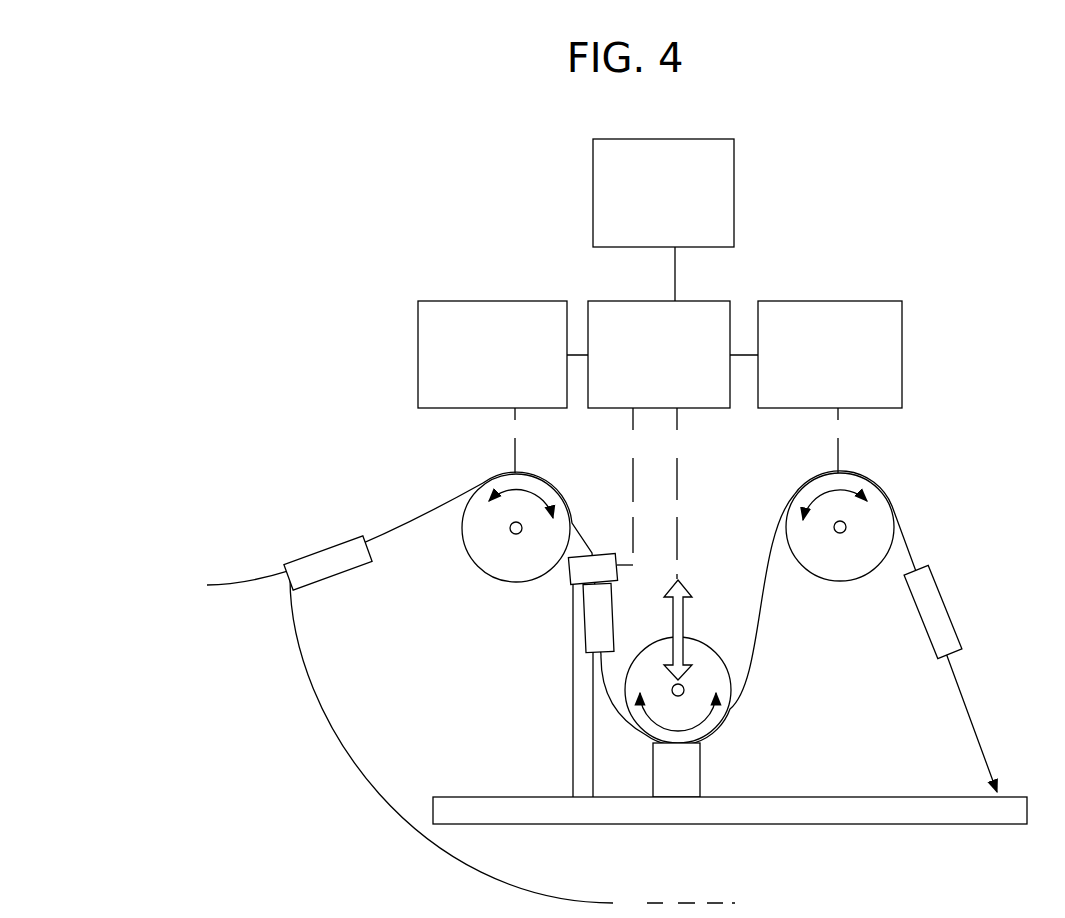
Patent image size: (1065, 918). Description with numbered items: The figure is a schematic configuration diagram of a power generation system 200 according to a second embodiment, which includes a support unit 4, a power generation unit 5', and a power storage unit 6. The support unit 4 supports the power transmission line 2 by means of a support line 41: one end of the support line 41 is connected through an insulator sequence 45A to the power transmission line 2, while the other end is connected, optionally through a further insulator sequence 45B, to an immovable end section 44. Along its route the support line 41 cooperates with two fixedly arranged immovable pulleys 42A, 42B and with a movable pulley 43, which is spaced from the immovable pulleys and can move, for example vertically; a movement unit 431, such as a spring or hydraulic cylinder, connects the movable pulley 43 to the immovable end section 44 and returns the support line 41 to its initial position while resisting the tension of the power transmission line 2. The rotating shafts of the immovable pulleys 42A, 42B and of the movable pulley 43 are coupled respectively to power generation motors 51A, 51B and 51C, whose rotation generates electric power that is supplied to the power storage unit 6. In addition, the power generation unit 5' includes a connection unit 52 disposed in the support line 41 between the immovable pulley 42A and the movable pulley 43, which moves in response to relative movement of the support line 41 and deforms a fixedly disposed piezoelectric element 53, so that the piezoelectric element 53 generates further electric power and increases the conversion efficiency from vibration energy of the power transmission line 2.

The power generation system 200 is at (459, 136).
The power storage unit 6 is at (722, 150).
The power generation motor 51A is at (560, 327).
The power generation motor 51B is at (893, 327).
The power generation motor 51C is at (720, 327).
The power generation unit 5' is at (982, 316).
The support unit 4 is at (964, 518).
The power transmission line 2 is at (230, 583).
The support line 41 is at (760, 613).
The immovable pulley 42A is at (552, 497).
The immovable pulley 42B is at (880, 505).
The movable pulley 43 is at (713, 667).
The movement unit 431 is at (693, 782).
The immovable end section 44 is at (1012, 807).
The insulator sequence 45A is at (338, 555).
The insulator sequence 45B is at (947, 627).
The connection unit 52 is at (597, 617).
The piezoelectric element 53 is at (595, 568).